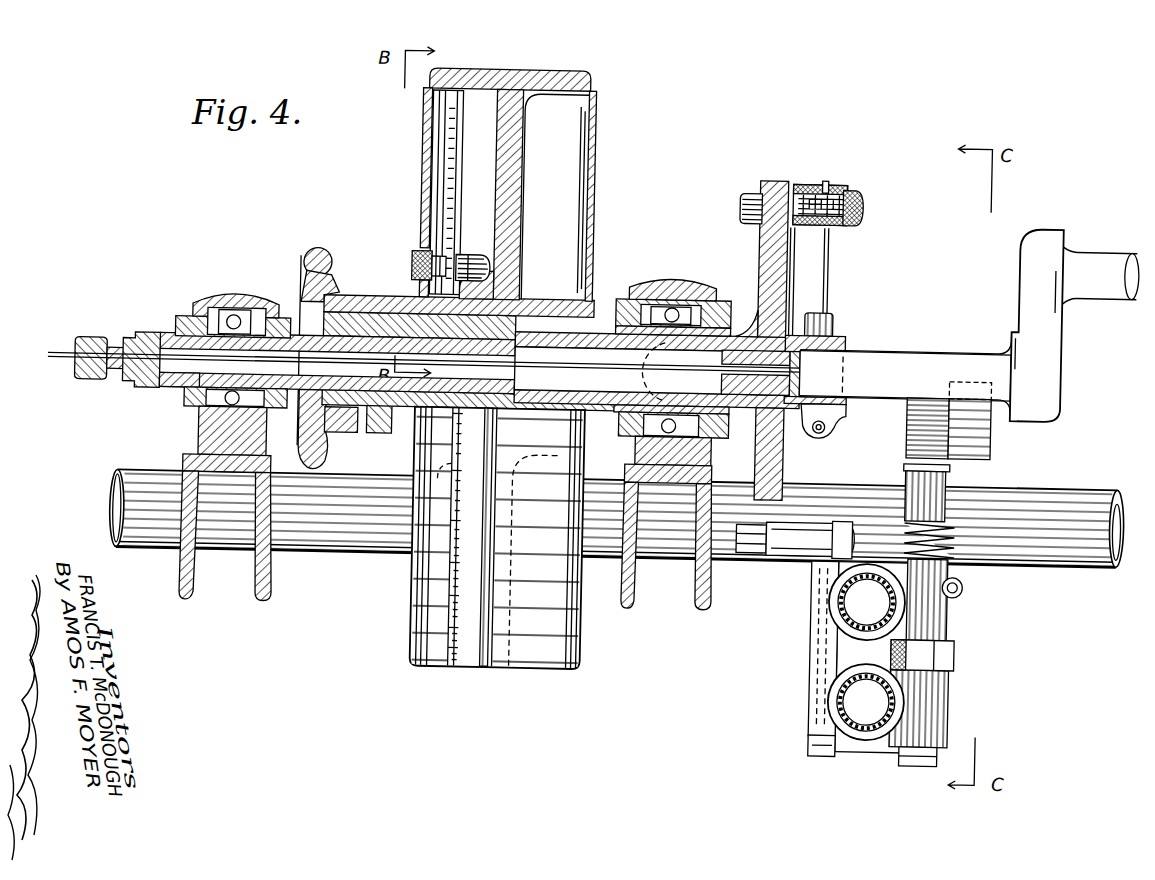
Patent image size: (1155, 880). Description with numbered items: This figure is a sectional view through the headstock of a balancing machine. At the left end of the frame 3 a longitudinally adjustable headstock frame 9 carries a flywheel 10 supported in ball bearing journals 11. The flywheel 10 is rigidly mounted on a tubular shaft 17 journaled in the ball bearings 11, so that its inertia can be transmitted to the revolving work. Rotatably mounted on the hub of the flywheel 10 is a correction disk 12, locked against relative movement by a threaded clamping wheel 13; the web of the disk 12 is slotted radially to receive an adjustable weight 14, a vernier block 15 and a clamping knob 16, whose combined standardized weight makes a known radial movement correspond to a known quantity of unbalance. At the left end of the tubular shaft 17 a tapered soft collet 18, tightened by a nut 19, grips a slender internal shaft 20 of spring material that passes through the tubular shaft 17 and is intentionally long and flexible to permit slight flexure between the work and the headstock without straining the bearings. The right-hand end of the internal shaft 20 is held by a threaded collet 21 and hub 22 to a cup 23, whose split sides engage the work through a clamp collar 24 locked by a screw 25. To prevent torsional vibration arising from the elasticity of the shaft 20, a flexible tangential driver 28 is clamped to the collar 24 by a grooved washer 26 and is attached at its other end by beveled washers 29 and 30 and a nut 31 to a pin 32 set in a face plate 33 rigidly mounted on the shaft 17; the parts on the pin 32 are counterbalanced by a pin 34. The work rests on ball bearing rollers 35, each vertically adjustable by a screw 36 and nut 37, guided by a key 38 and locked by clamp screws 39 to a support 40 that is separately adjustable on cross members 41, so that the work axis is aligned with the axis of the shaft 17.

The frame 3 is at (1050, 476).
The headstock frame 9 is at (262, 575).
The flywheel 10 is at (484, 239).
The ball bearing journals 11 is at (231, 311).
The correction disk 12 is at (428, 134).
The threaded clamping wheel 13 is at (346, 356).
The adjustable weight 14 is at (472, 246).
The vernier block 15 is at (434, 252).
The clamping knob 16 is at (410, 259).
The tubular shaft 17 is at (479, 366).
The tapered soft collet 18 is at (128, 383).
The nut 19 is at (90, 334).
The internal shaft 20 is at (170, 372).
The threaded collet 21 is at (735, 372).
The hub 22 is at (735, 342).
The cup 23 is at (846, 337).
The clamp collar 24 is at (832, 321).
The screw 25 is at (826, 411).
The grooved washer 26 is at (815, 297).
The tangential driver 28 is at (828, 249).
The beveled washer 29 is at (821, 175).
The beveled washer 30 is at (826, 172).
The nut 31 is at (862, 187).
The pin 32 is at (814, 213).
The face plate 33 is at (758, 242).
The pin 34 is at (795, 538).
The ball bearing rollers 35 is at (975, 405).
The screw 36 is at (922, 484).
The nut 37 is at (954, 634).
The key 38 is at (905, 532).
The clamp screws 39 is at (968, 569).
The support 40 is at (937, 690).
The cross members 41 is at (893, 590).